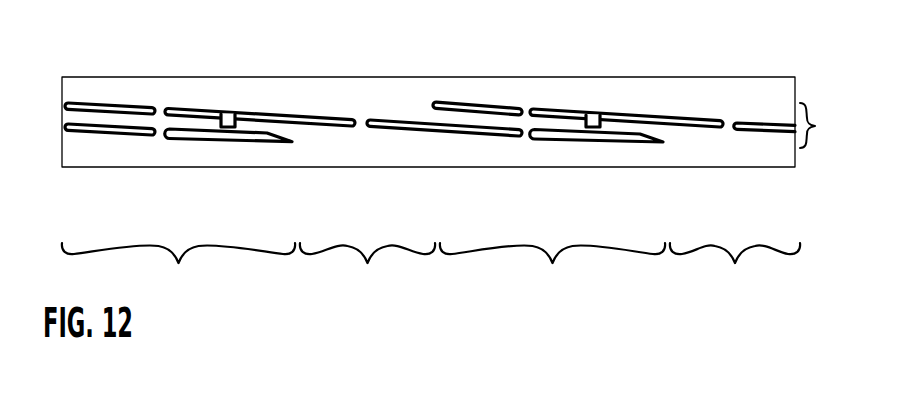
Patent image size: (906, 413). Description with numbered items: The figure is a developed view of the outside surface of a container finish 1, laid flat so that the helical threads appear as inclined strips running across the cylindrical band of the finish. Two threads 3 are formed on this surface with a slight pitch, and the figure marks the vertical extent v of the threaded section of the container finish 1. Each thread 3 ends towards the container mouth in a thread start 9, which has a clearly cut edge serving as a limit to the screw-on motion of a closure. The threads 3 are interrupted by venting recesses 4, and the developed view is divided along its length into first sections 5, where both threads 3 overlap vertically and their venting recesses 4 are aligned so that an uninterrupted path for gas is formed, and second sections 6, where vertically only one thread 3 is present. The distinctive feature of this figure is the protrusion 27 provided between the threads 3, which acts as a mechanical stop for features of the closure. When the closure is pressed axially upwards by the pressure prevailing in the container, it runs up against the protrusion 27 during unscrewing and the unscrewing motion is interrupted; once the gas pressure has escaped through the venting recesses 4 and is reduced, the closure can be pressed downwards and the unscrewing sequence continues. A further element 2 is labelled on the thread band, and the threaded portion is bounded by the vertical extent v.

The container finish 1 is at (327, 76).
The conductor strip 2 is at (607, 95).
The thread 3 is at (207, 141).
The venting recess 4 is at (158, 103).
The first section 5 is at (363, 274).
The second section 6 is at (550, 274).
The thread start 9 is at (68, 101).
The protrusion 27 is at (230, 120).
The vertical extent v is at (818, 125).